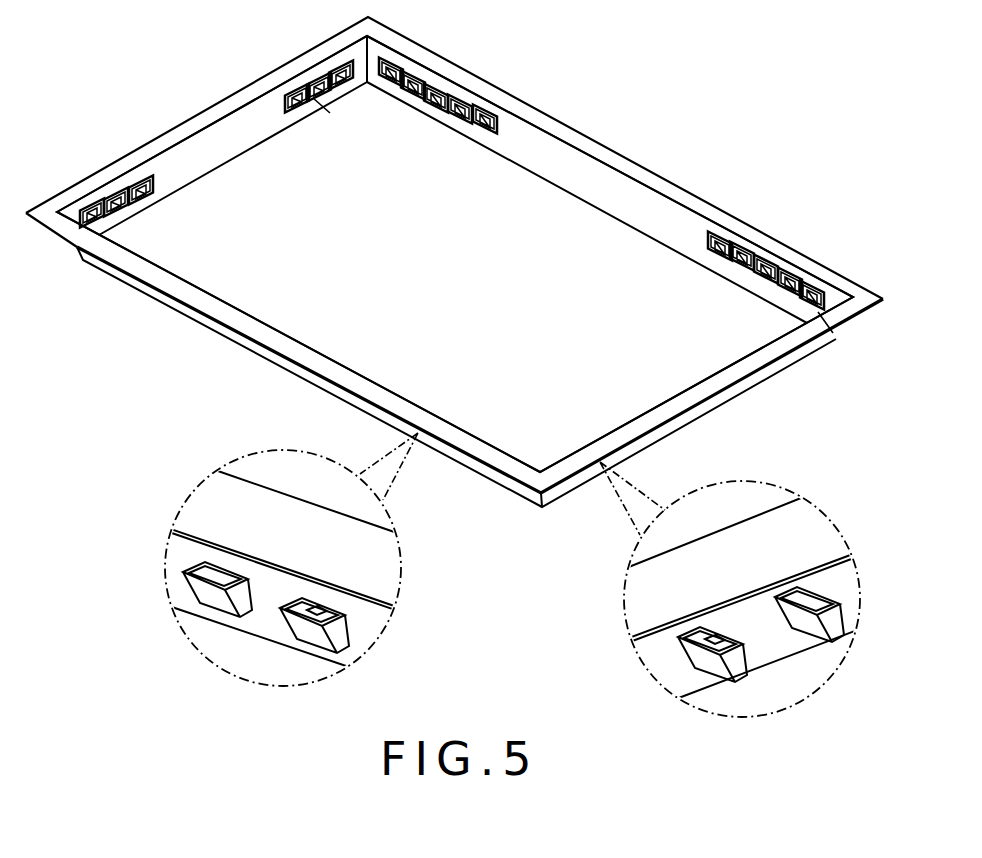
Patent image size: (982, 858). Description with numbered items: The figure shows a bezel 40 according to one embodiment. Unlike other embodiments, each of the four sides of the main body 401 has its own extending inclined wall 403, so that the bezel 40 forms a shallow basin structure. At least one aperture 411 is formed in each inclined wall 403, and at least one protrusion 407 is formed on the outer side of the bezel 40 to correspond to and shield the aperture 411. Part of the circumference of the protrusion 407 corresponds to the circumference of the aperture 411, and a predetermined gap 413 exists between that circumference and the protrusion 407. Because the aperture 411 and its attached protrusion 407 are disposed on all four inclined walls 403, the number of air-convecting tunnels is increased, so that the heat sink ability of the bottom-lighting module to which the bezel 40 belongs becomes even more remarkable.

The bezel 40 is at (122, 83).
The main body 401 is at (408, 356).
The inclined wall 403 is at (112, 173).
The protrusion 407 is at (342, 66).
The aperture 411 is at (330, 113).
The predetermined gap 413 is at (350, 613).